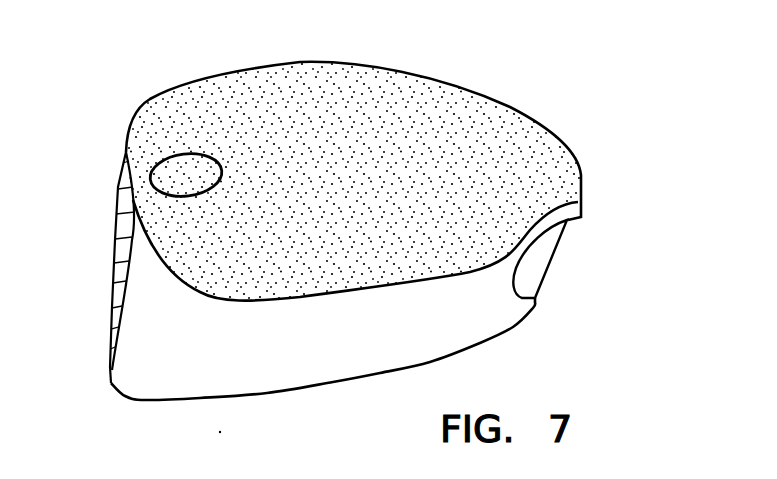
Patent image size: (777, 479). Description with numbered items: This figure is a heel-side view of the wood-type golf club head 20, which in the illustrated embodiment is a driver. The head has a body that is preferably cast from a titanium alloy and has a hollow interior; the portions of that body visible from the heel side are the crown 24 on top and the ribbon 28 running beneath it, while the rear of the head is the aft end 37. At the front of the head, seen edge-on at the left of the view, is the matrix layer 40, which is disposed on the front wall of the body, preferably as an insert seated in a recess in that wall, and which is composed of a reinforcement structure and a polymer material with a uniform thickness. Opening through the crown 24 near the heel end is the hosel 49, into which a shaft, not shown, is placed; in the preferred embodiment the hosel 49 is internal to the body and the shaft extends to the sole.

The golf club head 20 is at (366, 202).
The crown 24 is at (468, 88).
The ribbon 28 is at (468, 298).
The aft end 37 is at (596, 239).
The matrix layer 40 is at (118, 186).
The hosel 49 is at (188, 177).